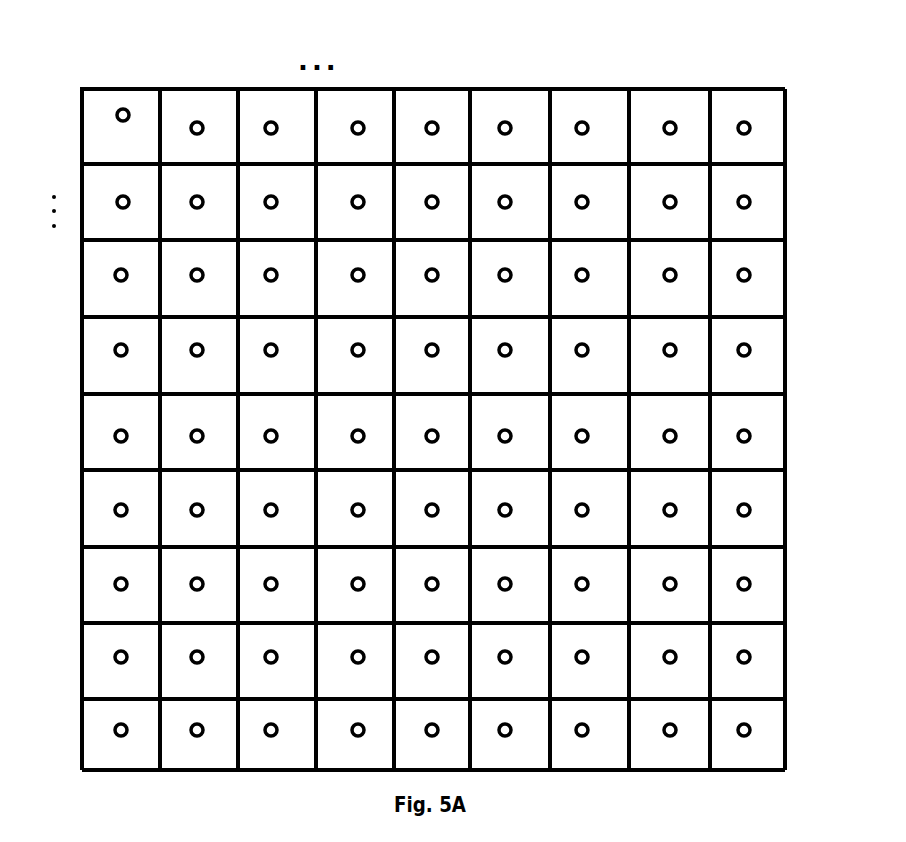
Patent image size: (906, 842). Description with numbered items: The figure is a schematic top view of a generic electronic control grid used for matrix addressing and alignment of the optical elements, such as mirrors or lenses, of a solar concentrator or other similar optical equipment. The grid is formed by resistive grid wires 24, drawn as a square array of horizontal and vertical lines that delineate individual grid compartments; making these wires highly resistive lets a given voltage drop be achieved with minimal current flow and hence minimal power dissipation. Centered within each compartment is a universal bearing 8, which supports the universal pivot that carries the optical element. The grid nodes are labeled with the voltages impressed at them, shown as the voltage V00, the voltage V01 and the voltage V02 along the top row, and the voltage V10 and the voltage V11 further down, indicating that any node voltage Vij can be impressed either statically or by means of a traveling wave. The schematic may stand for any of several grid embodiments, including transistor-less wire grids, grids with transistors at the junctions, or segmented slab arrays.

The resistive grid wires 24 is at (747, 313).
The centered universal bearings 8 is at (752, 349).
The voltage at node 00 V00 is at (109, 105).
The voltage at node 01 V01 is at (188, 105).
The voltage at node 02 V02 is at (268, 105).
The voltage at node 10 V10 is at (98, 193).
The voltage at node 11 V11 is at (179, 182).